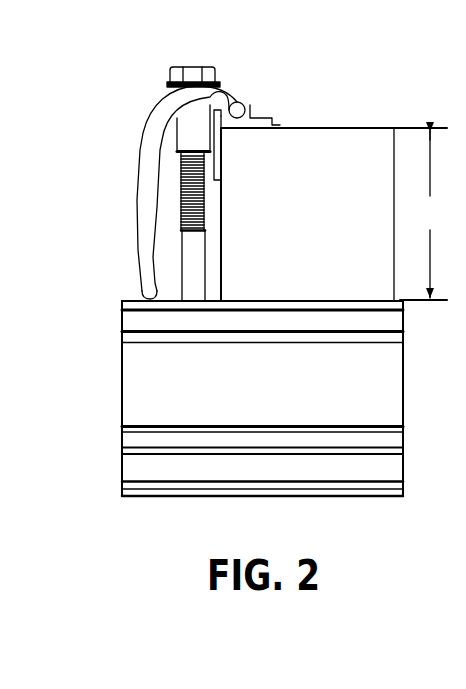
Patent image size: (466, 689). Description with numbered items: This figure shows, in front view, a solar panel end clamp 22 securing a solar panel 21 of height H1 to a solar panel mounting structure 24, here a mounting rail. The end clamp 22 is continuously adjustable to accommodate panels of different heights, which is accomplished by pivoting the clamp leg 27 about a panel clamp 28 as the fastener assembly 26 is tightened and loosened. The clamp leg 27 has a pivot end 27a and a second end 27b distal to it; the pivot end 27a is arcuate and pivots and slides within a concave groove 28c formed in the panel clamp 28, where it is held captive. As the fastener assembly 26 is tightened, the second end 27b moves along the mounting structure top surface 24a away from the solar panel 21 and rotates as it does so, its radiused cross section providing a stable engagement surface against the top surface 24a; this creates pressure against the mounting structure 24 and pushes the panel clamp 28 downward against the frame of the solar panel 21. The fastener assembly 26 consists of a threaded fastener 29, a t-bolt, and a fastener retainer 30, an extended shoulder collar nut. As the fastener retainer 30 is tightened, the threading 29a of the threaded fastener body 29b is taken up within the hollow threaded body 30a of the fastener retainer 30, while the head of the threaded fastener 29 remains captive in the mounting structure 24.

The solar panel 21 is at (375, 128).
The solar panel end clamp 22 is at (203, 175).
The solar panel mounting structure 24 is at (291, 379).
The mounting structure top surface 24a is at (300, 301).
The fastener assembly 26 is at (210, 155).
The clamp leg 27 is at (203, 193).
The pivot end 27a is at (243, 101).
The second end 27b is at (148, 287).
The panel clamp 28 is at (280, 138).
The concave groove 28c is at (227, 130).
The threaded fastener 29 is at (237, 202).
The threading 29a is at (204, 210).
The threaded fastener body 29b is at (206, 246).
The fastener retainer 30 is at (169, 75).
The hollow threaded body 30a is at (143, 133).
The height H1 is at (423, 215).